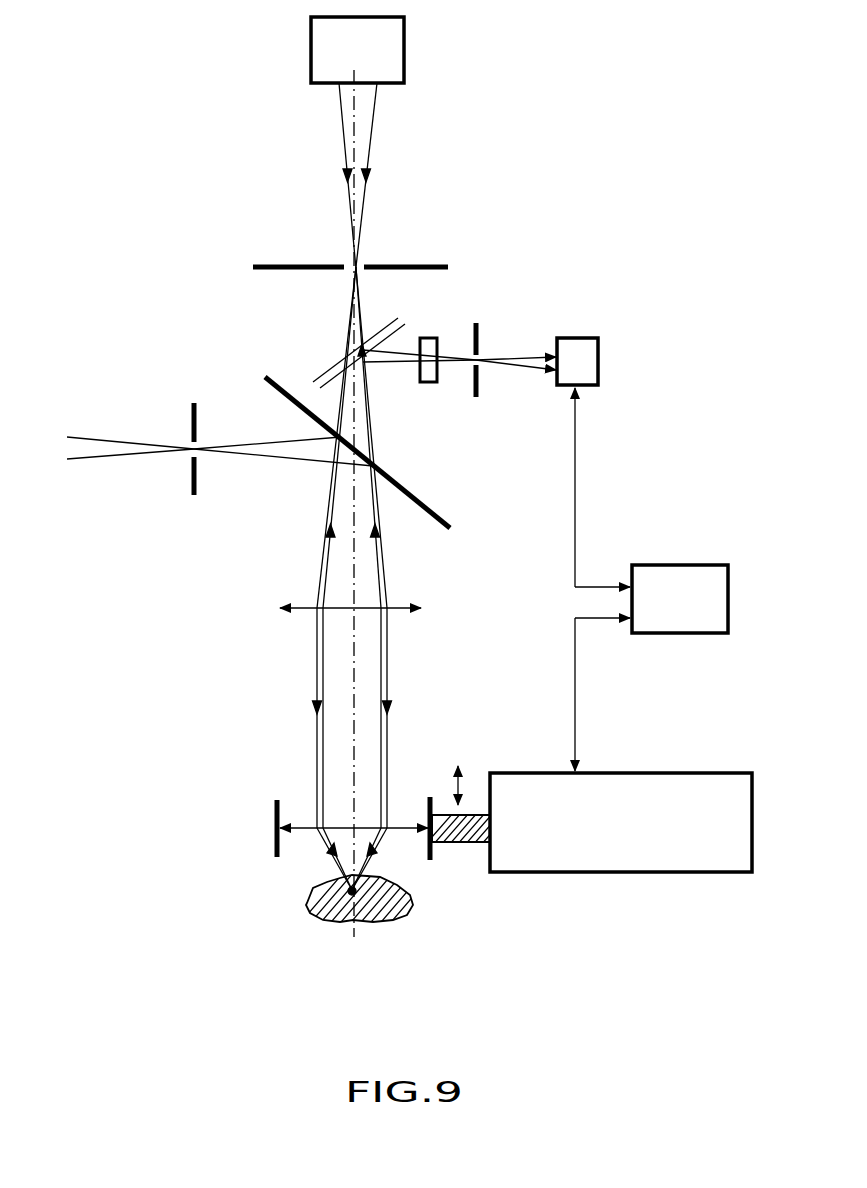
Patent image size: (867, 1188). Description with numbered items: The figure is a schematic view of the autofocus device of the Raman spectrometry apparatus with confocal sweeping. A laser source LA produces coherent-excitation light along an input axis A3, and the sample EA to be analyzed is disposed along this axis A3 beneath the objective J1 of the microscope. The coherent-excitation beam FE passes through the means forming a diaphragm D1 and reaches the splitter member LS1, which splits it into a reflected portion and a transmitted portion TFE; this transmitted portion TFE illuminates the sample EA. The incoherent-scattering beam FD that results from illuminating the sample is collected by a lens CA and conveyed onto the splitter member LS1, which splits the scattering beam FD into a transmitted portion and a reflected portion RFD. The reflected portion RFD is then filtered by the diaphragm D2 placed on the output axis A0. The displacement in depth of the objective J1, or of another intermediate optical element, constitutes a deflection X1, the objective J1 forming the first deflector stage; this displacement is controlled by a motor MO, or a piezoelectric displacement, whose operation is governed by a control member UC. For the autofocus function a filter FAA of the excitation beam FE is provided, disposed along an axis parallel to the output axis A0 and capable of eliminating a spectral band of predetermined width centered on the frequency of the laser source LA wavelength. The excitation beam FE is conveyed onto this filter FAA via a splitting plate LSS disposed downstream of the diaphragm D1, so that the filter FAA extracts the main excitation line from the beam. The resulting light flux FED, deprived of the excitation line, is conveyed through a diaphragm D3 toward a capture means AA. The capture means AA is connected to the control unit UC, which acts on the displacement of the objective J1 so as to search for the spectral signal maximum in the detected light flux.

The laser source LA is at (404, 36).
The input axis A3 is at (355, 124).
The coherent-excitation beam FE is at (368, 168).
The diaphragm D1 is at (430, 264).
The splitting plate LSS is at (318, 370).
The light flux FED is at (513, 367).
The filter FAA is at (428, 383).
The diaphragm D3 is at (479, 333).
The capture means AA is at (587, 336).
The diaphragm D2 is at (190, 413).
The output axis A0 is at (88, 448).
The reflected portion of the scattering beam RFD is at (223, 455).
The splitter member LS1 is at (427, 500).
The incoherent-scattering beam FD is at (383, 550).
The lens CA is at (417, 613).
The transmitted portion of the excitation beam TFE is at (388, 693).
The objective J1 is at (275, 818).
The deflection X1 is at (479, 771).
The motor MO is at (675, 770).
The control unit UC is at (673, 635).
The sample EA is at (400, 918).